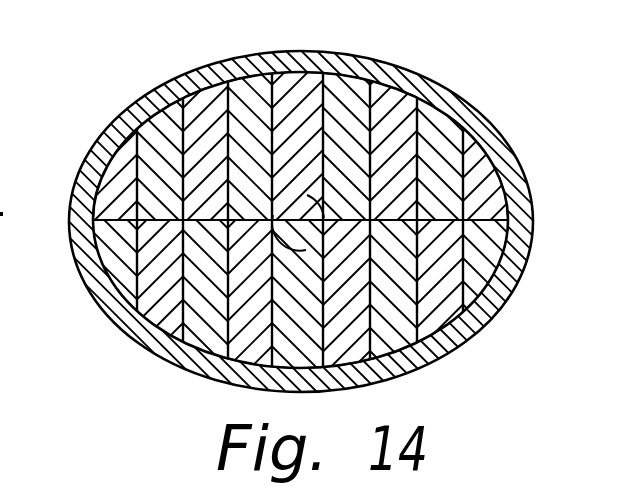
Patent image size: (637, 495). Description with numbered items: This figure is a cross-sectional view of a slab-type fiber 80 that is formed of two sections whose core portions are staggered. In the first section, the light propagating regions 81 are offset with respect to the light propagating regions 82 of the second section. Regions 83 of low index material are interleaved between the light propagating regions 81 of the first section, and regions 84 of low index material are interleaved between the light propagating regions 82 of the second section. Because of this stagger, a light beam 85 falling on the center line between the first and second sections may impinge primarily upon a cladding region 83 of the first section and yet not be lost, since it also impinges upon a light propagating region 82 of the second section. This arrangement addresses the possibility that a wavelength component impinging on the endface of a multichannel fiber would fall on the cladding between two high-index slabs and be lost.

The slab-type fiber 80 is at (428, 76).
The light propagating regions 81 is at (279, 74).
The light propagating regions 82 is at (160, 333).
The regions of low index material 83 is at (257, 82).
The regions of low index material 84 is at (123, 273).
The light beam 85 is at (302, 183).